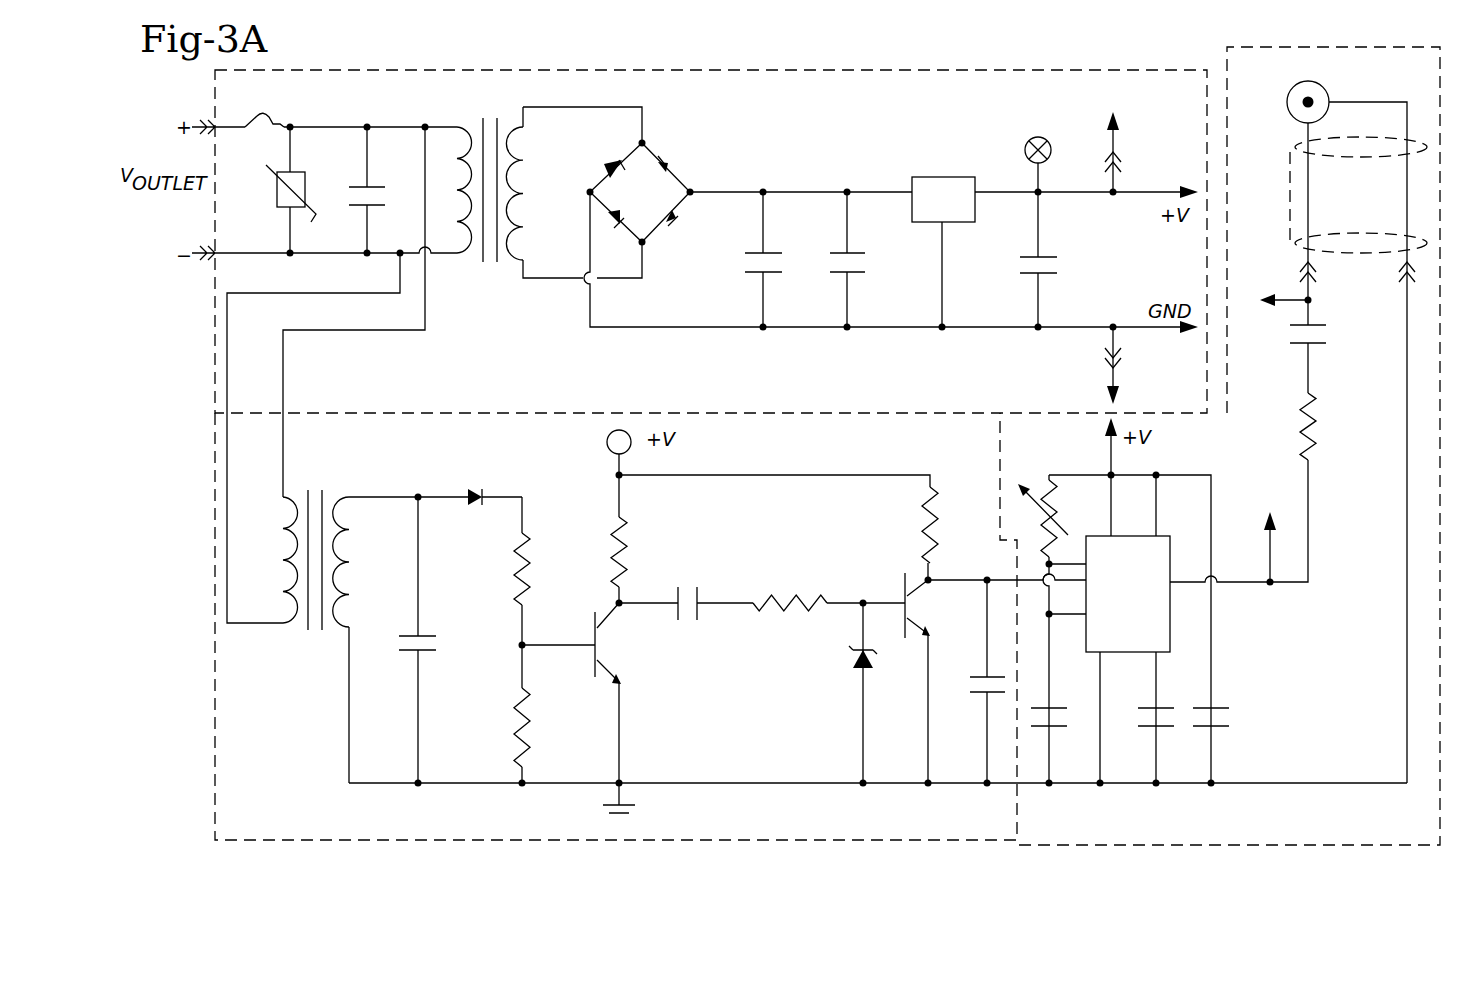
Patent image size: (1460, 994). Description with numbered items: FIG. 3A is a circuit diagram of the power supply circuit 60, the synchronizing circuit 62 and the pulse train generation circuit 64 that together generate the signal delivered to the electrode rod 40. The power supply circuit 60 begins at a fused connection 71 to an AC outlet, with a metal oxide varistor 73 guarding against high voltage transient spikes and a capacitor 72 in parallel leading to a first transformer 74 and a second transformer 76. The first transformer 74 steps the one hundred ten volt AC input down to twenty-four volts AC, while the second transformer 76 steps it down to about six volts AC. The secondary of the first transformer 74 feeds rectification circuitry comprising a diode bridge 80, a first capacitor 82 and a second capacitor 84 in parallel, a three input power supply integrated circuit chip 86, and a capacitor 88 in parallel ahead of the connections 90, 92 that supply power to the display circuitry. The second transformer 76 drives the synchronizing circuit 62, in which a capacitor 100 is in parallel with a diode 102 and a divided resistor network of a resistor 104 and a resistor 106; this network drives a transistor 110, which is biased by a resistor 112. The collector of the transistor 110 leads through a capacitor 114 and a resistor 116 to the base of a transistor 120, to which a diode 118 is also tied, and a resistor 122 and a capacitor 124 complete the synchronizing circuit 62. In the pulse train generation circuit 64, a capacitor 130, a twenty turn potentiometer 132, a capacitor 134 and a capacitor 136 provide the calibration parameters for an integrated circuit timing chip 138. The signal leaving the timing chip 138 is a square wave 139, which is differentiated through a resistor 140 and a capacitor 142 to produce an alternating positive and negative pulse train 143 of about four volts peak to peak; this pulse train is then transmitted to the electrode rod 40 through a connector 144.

The electrode rod 40 is at (1324, 88).
The power supply circuit 60 is at (947, 70).
The synchronizing circuit 62 is at (210, 680).
The pulse train generation circuit 64 is at (1415, 845).
The fused connection 71 is at (262, 115).
The capacitor 72 is at (376, 187).
The varistor 73 is at (306, 190).
The first transformer 74 is at (549, 194).
The second transformer 76 is at (350, 625).
The diode bridge 80 is at (640, 193).
The first capacitor 82 is at (756, 253).
The second capacitor 84 is at (840, 253).
The three input power supply integrated circuit chip 86 is at (943, 252).
The capacitor 88 is at (1032, 257).
The connection 90 is at (1100, 144).
The connection 92 is at (1131, 365).
The capacitor 100 is at (424, 636).
The diode 102 is at (486, 492).
The resistor 104 is at (528, 530).
The resistor 106 is at (529, 708).
The transistor 110 is at (610, 658).
The resistor 112 is at (626, 550).
The capacitor 114 is at (724, 570).
The resistor 116 is at (822, 598).
The diode 118 is at (860, 672).
The transistor 120 is at (952, 612).
The resistor 122 is at (940, 520).
The capacitor 124 is at (982, 683).
The capacitor 130 is at (1055, 725).
The potentiometer 132 is at (1075, 512).
The capacitor 134 is at (1125, 733).
The capacitor 136 is at (1233, 705).
The integrated circuit timing chip 138 is at (1178, 659).
The square wave 139 is at (1270, 538).
The resistor 140 is at (1314, 460).
The capacitor 142 is at (1300, 345).
The pulse train 143 is at (1275, 314).
The connector 144 is at (1347, 442).